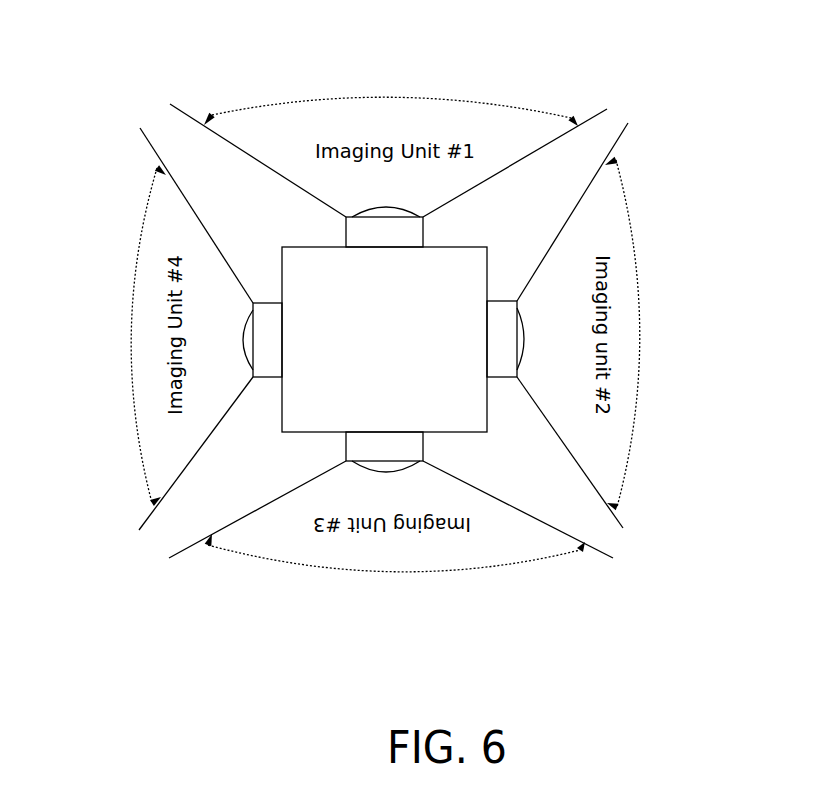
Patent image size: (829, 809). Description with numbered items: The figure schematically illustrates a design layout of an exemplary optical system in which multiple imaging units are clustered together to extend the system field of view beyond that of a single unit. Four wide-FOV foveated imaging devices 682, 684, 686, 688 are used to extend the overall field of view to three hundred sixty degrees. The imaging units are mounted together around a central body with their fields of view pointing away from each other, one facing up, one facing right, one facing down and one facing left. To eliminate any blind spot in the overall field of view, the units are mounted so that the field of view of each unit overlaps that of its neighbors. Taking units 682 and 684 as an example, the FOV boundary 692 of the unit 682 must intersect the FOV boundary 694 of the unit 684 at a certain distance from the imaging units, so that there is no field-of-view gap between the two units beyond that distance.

The wide-FOV foveated imaging device 682 is at (425, 220).
The wide-FOV foveated imaging device 684 is at (497, 320).
The wide-FOV foveated imaging device 686 is at (410, 446).
The wide-FOV foveated imaging device 688 is at (270, 357).
The FOV boundary 692 is at (597, 108).
The FOV boundary 694 is at (628, 123).